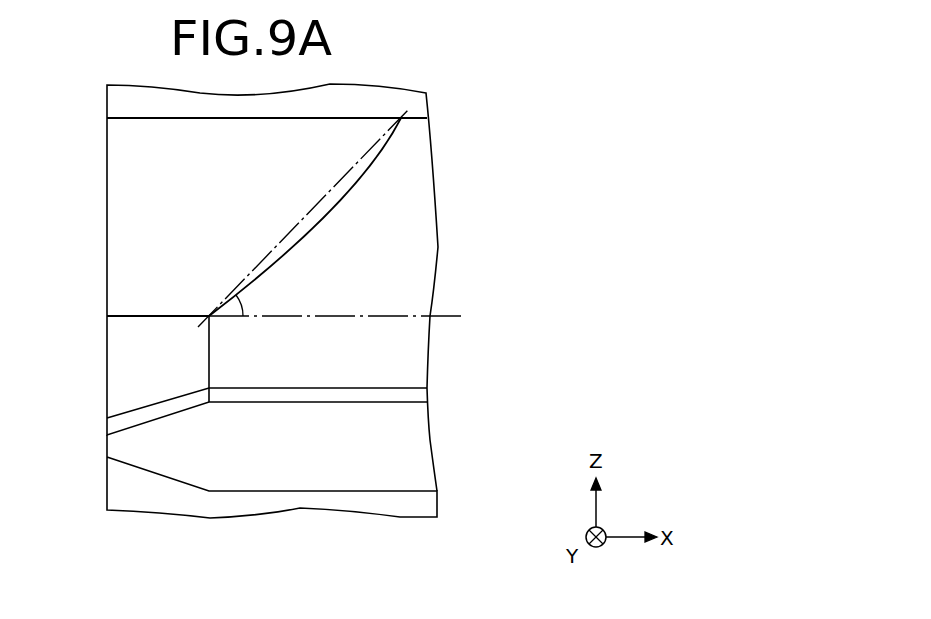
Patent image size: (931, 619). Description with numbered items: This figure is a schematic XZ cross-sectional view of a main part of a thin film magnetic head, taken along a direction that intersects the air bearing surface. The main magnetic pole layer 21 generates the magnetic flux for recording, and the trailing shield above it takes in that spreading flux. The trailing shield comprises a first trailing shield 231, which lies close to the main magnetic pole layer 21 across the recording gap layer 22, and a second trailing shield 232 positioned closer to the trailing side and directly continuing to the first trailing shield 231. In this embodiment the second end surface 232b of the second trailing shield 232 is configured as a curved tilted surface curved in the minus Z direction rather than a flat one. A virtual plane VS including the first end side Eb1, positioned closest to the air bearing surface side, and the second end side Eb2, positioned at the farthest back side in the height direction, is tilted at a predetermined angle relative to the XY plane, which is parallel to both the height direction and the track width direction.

The second trailing shield 232 is at (122, 215).
The first trailing shield 231 is at (123, 380).
The recording gap layer 22 is at (122, 425).
The main magnetic pole layer 21 is at (158, 463).
The first end side Eb1 is at (211, 318).
The second end side Eb2 is at (402, 120).
The virtual plane VS is at (345, 177).
The second end surface 232b is at (330, 226).